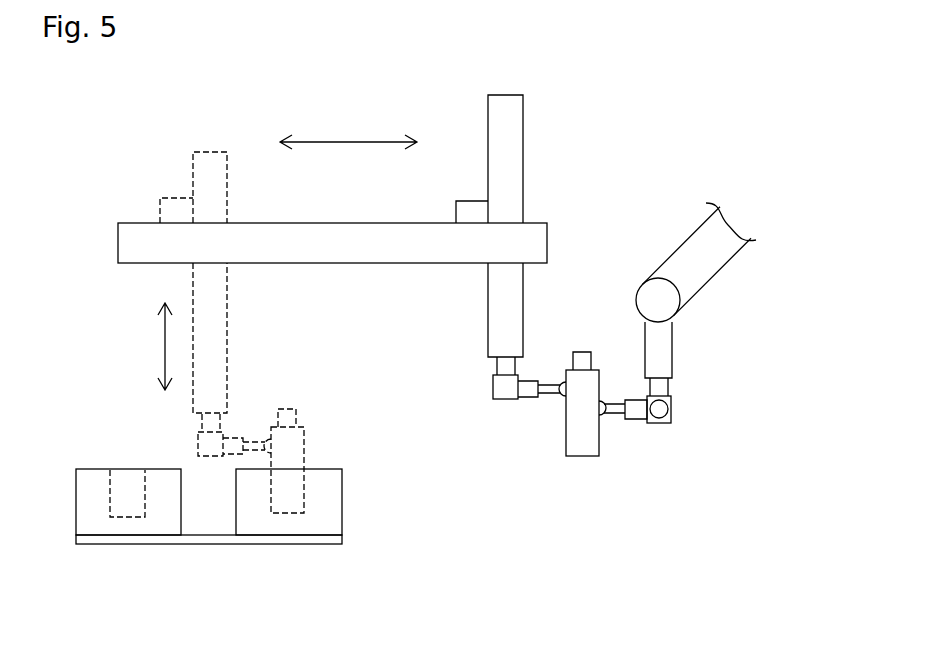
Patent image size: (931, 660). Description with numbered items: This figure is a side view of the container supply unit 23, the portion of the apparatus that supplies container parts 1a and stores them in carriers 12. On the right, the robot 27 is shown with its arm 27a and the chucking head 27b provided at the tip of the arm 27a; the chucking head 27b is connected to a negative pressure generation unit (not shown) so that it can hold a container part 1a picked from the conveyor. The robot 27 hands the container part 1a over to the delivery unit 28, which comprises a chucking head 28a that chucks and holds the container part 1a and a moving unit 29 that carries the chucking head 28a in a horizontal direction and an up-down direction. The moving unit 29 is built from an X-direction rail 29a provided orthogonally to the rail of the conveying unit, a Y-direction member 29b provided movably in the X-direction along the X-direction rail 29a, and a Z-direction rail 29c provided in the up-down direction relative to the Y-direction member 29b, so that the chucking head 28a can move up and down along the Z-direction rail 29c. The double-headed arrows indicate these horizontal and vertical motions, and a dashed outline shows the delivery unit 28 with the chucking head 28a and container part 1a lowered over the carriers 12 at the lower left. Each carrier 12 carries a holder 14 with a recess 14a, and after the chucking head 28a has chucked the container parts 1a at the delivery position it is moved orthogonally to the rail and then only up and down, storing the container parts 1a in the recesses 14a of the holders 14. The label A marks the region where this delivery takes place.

The container part 1a is at (577, 457).
The carrier 12 is at (166, 540).
The holder 14 is at (76, 505).
The recess 14a is at (120, 481).
The container supply unit 23 is at (268, 110).
The robot 27 is at (705, 288).
The arm 27a is at (730, 262).
The chucking head 27b is at (613, 417).
The delivery unit 28 is at (498, 92).
The chucking head 28a is at (508, 399).
The moving unit 29 is at (524, 160).
The X-direction rail 29a is at (359, 254).
The Y-direction member 29b is at (470, 200).
The Z-direction rail 29c is at (523, 118).
The transfer area A is at (660, 88).